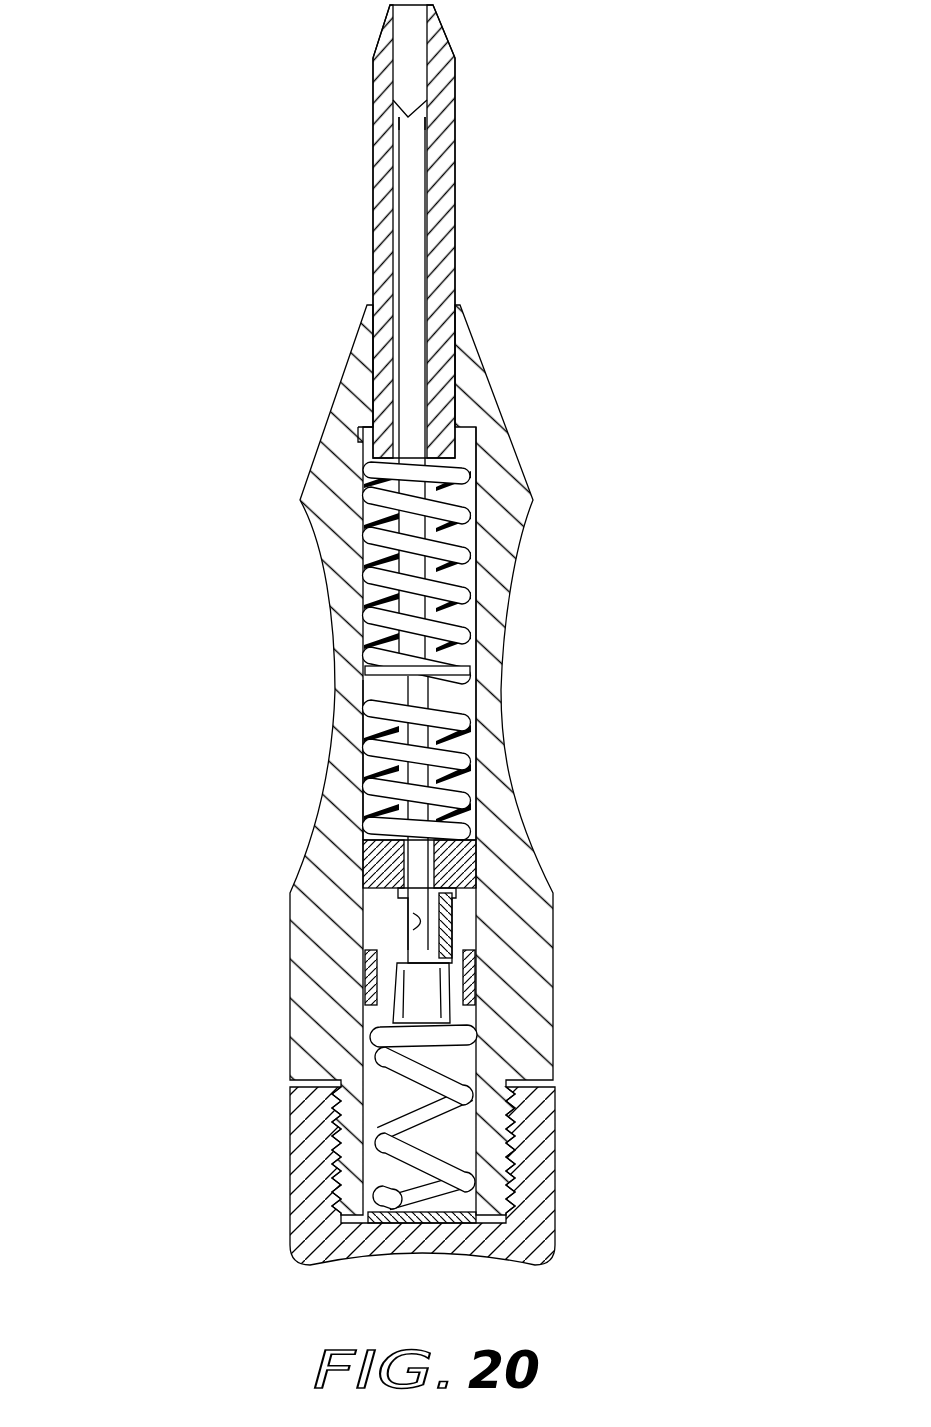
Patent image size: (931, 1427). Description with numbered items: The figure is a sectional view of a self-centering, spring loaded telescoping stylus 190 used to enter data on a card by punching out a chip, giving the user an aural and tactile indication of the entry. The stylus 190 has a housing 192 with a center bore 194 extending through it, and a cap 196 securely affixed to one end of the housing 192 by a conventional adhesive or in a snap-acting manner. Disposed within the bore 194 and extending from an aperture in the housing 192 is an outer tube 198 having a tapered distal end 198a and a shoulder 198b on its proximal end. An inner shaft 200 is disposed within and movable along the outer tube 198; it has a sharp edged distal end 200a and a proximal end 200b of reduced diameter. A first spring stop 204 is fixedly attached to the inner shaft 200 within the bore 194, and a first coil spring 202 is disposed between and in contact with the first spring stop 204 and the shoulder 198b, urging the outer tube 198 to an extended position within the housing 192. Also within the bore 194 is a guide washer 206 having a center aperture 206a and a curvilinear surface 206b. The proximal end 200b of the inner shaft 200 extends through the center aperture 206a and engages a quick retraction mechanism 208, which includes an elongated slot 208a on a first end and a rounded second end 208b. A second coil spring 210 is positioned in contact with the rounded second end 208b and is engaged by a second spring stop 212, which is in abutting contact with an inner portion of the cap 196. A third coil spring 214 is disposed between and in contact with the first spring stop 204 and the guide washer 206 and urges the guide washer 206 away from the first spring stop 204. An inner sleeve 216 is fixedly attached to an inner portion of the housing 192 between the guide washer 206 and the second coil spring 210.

The stylus 190 is at (218, 653).
The housing 192 is at (515, 573).
The center bore 194 is at (470, 703).
The cap 196 is at (540, 1157).
The outer tube 198 is at (445, 163).
The tapered distal end 198a is at (440, 22).
The shoulder 198b is at (358, 427).
The inner shaft 200 is at (425, 255).
The sharp edged distal end 200a is at (421, 98).
The proximal end 200b is at (413, 862).
The first coil spring 202 is at (365, 537).
The first spring stop 204 is at (368, 690).
The guide washer 206 is at (372, 873).
The center aperture 206a is at (468, 822).
The curvilinear surface 206b is at (470, 888).
The quick retraction mechanism 208 is at (515, 1035).
The elongated slot 208a is at (400, 934).
The rounded second end 208b is at (440, 1037).
The second coil spring 210 is at (385, 1138).
The second spring stop 212 is at (407, 1220).
The third coil spring 214 is at (372, 745).
The inner sleeve 216 is at (478, 925).